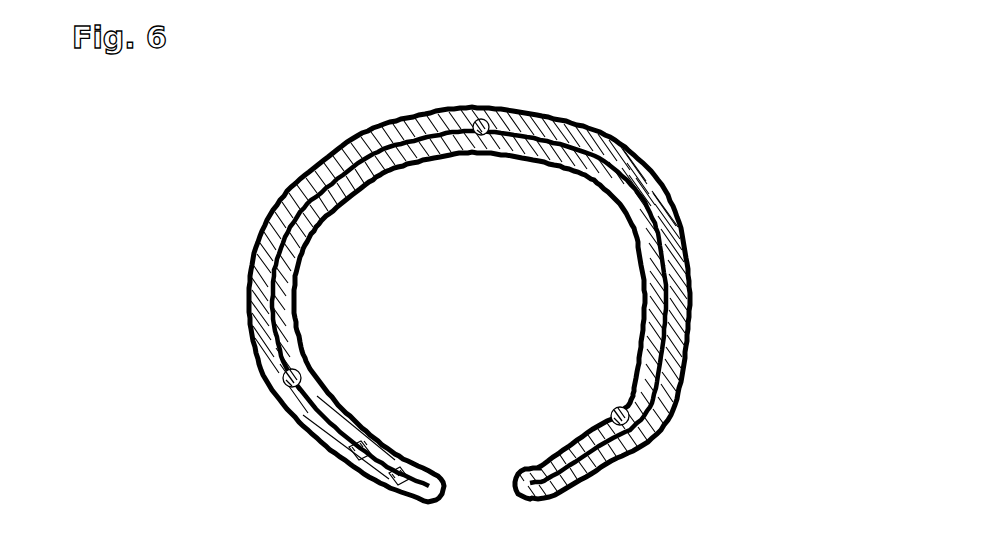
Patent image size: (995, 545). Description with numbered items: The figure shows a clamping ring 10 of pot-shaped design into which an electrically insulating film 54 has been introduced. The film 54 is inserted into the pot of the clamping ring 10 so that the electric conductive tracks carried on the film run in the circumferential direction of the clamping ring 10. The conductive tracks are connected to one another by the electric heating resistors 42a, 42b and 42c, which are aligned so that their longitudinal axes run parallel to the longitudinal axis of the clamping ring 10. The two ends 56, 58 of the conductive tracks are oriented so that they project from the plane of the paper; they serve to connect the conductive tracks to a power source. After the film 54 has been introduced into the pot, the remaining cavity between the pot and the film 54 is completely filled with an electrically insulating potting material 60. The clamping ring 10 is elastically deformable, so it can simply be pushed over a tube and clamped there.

The clamping ring 10 is at (483, 275).
The heating resistor 42a is at (283, 378).
The heating resistor 42b is at (482, 119).
The heating resistor 42c is at (629, 420).
The electrically insulating film 54 is at (672, 328).
The end of conductive track 56 is at (403, 473).
The end of conductive track 58 is at (362, 446).
The electrically insulating potting material 60 is at (694, 300).